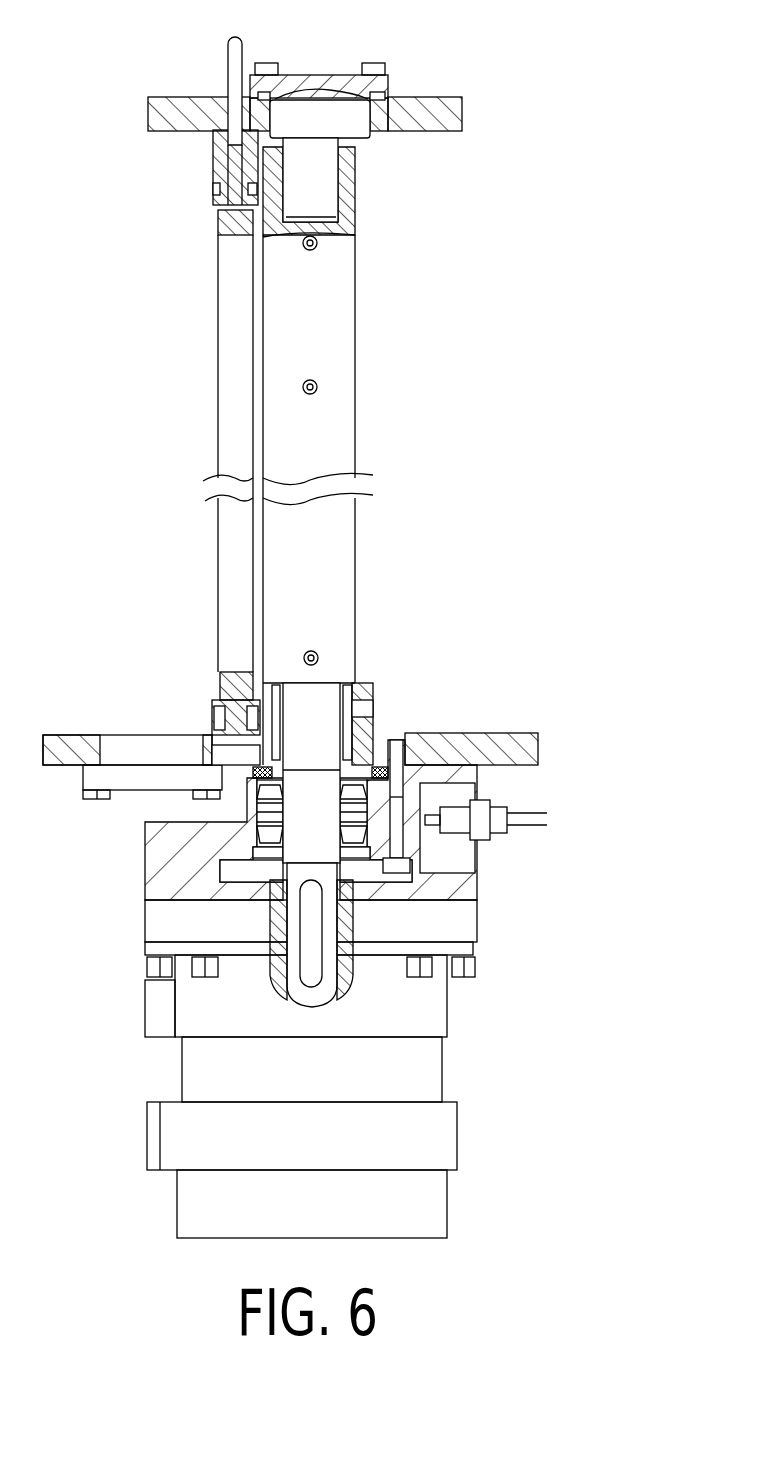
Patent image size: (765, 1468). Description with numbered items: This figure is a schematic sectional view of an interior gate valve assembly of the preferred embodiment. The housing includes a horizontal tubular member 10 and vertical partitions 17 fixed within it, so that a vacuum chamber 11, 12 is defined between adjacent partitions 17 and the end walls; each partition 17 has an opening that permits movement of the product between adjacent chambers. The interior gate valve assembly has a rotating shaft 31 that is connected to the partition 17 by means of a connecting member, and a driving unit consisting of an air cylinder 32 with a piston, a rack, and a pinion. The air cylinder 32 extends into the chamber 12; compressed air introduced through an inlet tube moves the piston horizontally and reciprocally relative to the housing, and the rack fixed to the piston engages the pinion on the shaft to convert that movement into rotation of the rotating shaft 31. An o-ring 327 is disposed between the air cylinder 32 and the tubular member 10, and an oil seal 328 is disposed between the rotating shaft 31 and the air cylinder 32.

The horizontal tubular member 10 is at (83, 735).
The vacuum chamber 11 is at (188, 147).
The vacuum chamber 12 is at (418, 173).
The vertical partition 17 is at (233, 342).
The rotating shaft 31 is at (334, 597).
The air cylinder 32 is at (492, 892).
The o-ring 327 is at (383, 770).
The oil seal 328 is at (363, 803).